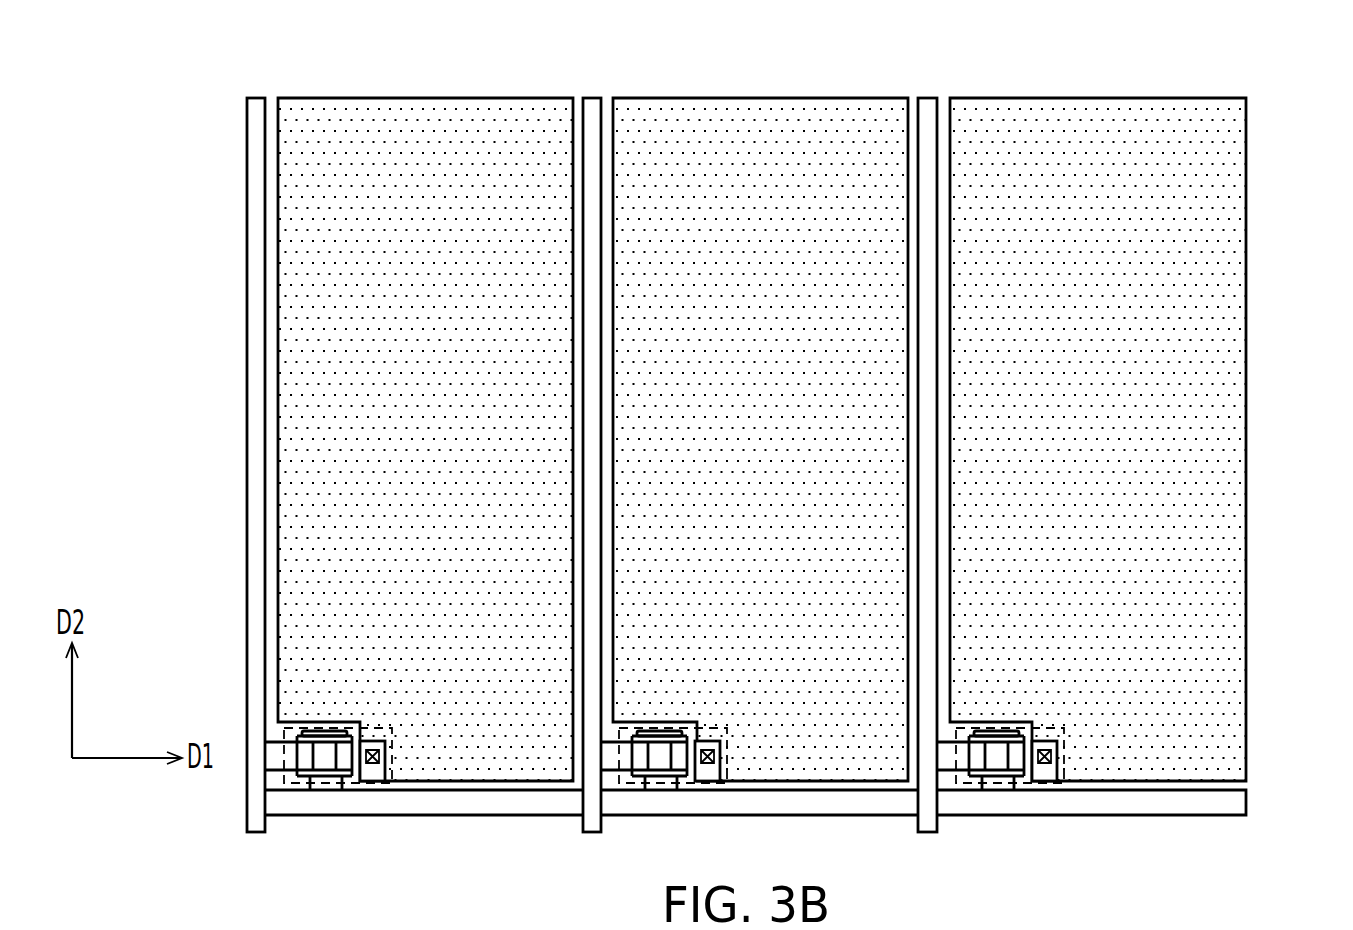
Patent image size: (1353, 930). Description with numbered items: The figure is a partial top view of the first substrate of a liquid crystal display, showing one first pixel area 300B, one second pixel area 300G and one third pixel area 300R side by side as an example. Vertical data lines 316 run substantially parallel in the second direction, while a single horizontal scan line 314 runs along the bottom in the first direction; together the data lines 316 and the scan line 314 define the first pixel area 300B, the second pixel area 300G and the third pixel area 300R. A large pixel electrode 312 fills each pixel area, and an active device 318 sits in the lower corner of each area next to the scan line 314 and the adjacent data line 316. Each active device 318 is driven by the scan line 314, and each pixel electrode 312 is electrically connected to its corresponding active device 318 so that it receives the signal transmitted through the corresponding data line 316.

The first pixel area 300B is at (584, 80).
The second pixel area 300G is at (919, 80).
The third pixel area 300R is at (1246, 80).
The pixel electrode 312 is at (298, 362).
The scan line 314 is at (1232, 800).
The data line 316 is at (253, 822).
The active device 318 is at (327, 783).